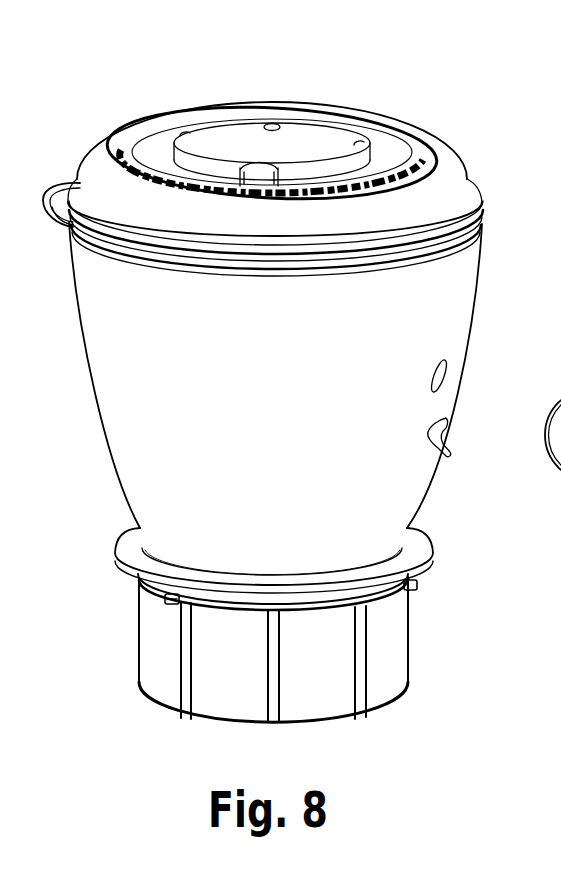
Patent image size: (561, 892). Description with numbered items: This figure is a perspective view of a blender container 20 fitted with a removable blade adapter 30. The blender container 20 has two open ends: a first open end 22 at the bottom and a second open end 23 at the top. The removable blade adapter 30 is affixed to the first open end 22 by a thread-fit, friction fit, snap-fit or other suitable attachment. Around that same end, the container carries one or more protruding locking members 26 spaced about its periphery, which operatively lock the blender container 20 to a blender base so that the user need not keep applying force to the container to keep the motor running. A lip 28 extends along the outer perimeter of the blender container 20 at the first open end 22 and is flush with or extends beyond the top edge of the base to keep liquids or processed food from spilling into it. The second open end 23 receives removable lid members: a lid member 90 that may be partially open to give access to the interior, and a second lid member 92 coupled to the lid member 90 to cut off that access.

The blender container 20 is at (447, 297).
The first open end 22 is at (97, 540).
The second open end 23 is at (505, 239).
The locking member 26 is at (165, 600).
The lip 28 is at (417, 548).
The removable blade adapter 30 is at (392, 647).
The lid member 90 is at (447, 168).
The second lid member 92 is at (340, 120).